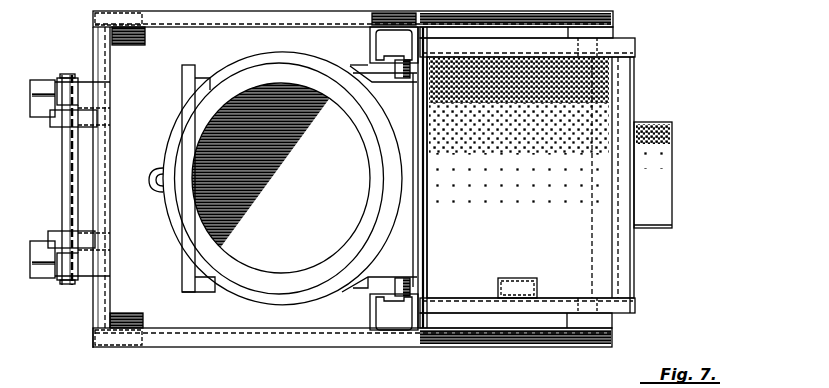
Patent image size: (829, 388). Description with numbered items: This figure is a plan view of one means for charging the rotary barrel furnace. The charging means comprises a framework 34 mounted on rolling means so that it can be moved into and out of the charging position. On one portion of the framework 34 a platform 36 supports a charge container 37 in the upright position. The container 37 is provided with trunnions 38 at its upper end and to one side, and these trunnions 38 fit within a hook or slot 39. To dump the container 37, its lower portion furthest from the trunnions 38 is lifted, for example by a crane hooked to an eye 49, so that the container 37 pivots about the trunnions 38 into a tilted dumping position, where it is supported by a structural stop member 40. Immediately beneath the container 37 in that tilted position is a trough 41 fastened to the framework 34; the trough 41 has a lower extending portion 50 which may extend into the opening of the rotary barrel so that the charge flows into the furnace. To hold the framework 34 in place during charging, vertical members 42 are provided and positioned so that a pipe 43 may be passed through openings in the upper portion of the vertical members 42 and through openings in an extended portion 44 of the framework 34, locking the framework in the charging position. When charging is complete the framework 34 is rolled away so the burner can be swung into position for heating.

The framework 34 is at (260, 344).
The platform 36 is at (210, 290).
The charge container 37 is at (236, 58).
The trunnions 38 is at (402, 62).
The hook or slot 39 is at (396, 70).
The structural stop member 40 is at (525, 287).
The trough 41 is at (534, 189).
The vertical members 42 is at (45, 80).
The pipe 43 is at (65, 186).
The extended portion 44 is at (58, 125).
The eye 49 is at (148, 193).
The lower extending portion 50 is at (670, 201).